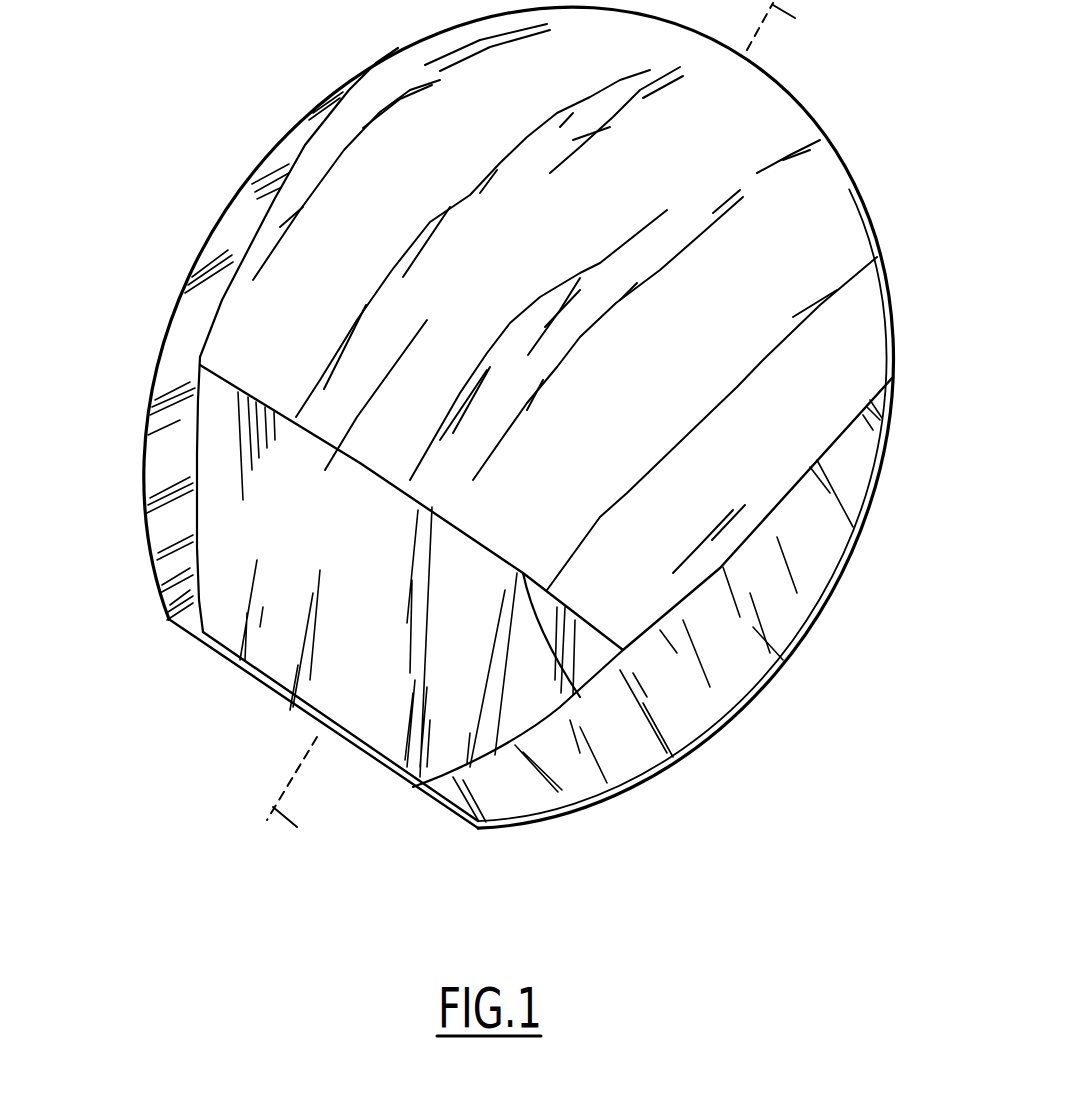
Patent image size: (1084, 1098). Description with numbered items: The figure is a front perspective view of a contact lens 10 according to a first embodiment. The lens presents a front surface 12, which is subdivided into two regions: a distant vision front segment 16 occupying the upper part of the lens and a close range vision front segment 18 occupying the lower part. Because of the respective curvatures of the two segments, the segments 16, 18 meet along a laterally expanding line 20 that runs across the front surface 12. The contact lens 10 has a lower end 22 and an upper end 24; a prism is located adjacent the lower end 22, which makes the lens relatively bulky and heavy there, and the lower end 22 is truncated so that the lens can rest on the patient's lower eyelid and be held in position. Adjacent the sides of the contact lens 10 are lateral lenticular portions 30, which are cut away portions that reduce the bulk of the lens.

The contact lens 10 is at (160, 107).
The front surface 12 is at (733, 460).
The distant vision front segment 16 is at (510, 272).
The close range vision front segment 18 is at (367, 652).
The laterally expanding line 20 is at (567, 687).
The lower end 22 is at (225, 665).
The upper end 24 is at (845, 163).
The lateral lenticular portions 30 is at (225, 240).